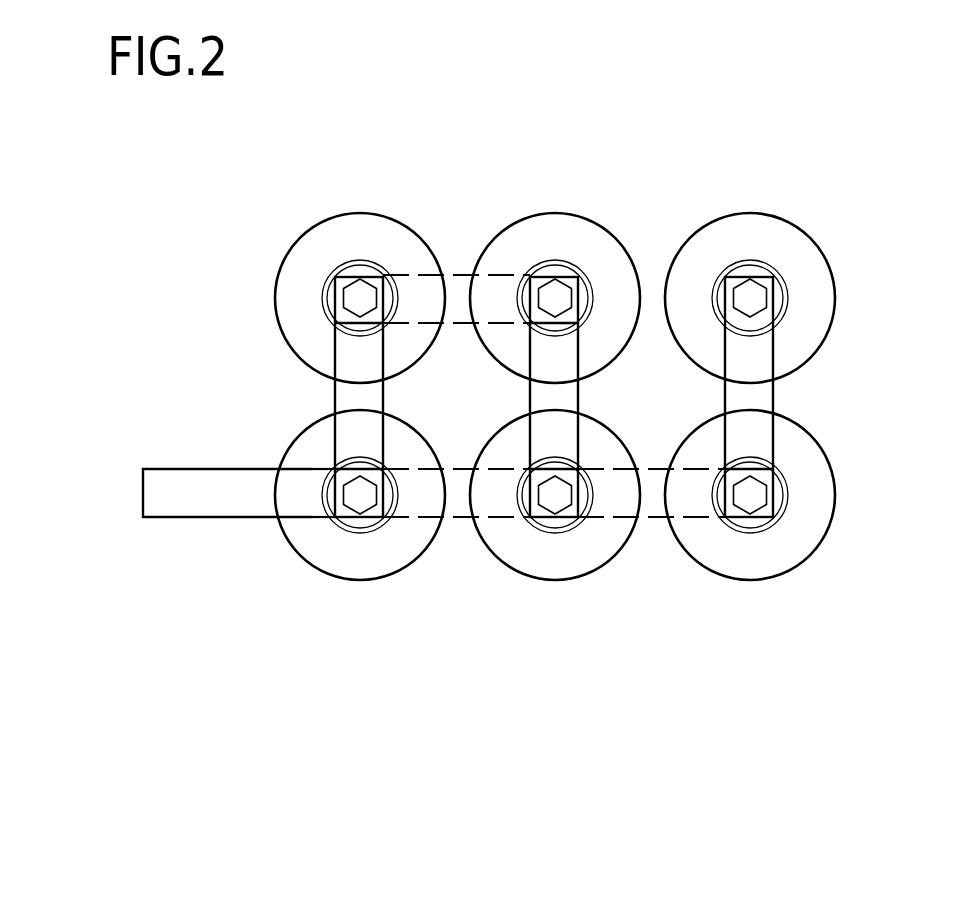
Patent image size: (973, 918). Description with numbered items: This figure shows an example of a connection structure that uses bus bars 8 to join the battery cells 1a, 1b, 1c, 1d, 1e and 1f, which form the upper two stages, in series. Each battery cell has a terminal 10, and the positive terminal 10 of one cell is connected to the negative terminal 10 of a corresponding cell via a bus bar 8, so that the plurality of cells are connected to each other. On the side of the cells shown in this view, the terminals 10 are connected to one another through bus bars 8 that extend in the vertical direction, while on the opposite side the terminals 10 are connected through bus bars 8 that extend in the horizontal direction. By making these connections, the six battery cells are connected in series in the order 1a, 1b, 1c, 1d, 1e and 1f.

The battery cell 1a is at (748, 214).
The battery cell 1b is at (765, 579).
The battery cell 1c is at (570, 579).
The battery cell 1d is at (553, 214).
The battery cell 1e is at (360, 214).
The battery cell 1f is at (374, 579).
The bus bar 8 is at (347, 438).
The terminal 10 is at (355, 277).